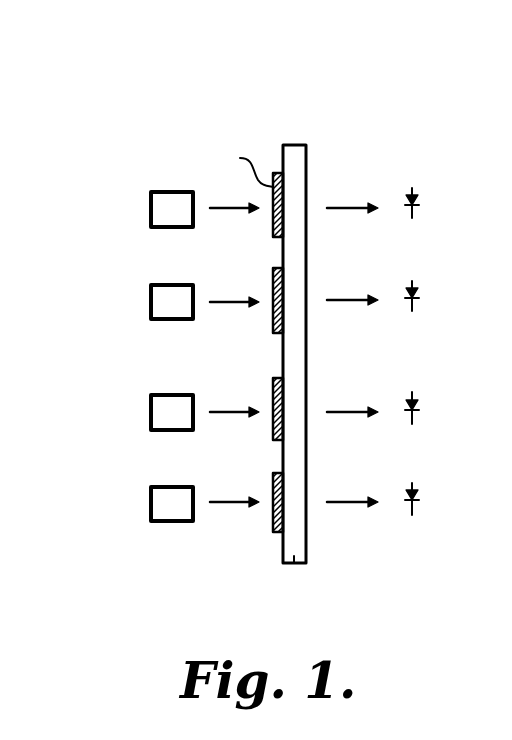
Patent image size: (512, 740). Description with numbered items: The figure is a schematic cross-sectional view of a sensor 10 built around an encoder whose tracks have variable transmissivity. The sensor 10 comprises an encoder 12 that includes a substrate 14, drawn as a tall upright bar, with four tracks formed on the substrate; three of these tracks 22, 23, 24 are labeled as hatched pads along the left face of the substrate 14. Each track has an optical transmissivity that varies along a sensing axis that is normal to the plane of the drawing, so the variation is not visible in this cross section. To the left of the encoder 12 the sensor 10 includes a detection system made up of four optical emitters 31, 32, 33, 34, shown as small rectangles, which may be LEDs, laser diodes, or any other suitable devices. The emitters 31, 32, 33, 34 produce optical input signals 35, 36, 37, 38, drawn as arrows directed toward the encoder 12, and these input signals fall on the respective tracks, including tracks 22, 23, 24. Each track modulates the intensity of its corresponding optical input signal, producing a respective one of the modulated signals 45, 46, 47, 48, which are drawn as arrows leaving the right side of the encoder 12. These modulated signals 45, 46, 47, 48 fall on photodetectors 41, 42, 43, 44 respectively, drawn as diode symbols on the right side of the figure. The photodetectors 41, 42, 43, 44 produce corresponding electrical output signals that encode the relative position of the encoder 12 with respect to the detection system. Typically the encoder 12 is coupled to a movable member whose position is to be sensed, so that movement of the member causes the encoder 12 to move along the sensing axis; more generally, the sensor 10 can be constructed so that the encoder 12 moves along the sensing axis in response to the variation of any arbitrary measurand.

The sensor 10 is at (277, 108).
The encoder 12 is at (315, 150).
The substrate 14 is at (294, 556).
The track 22 is at (273, 273).
The track 23 is at (273, 382).
The track 24 is at (273, 477).
The optical emitter 31 is at (151, 200).
The optical emitter 32 is at (151, 296).
The optical emitter 33 is at (151, 405).
The optical emitter 34 is at (151, 497).
The optical input signal 35 is at (226, 208).
The optical input signal 36 is at (226, 302).
The optical input signal 37 is at (226, 412).
The optical input signal 38 is at (226, 502).
The photodetector 41 is at (421, 199).
The photodetector 42 is at (421, 292).
The photodetector 43 is at (421, 404).
The photodetector 44 is at (421, 494).
The modulated signal 45 is at (343, 208).
The modulated signal 46 is at (343, 300).
The modulated signal 47 is at (343, 412).
The modulated signal 48 is at (343, 502).